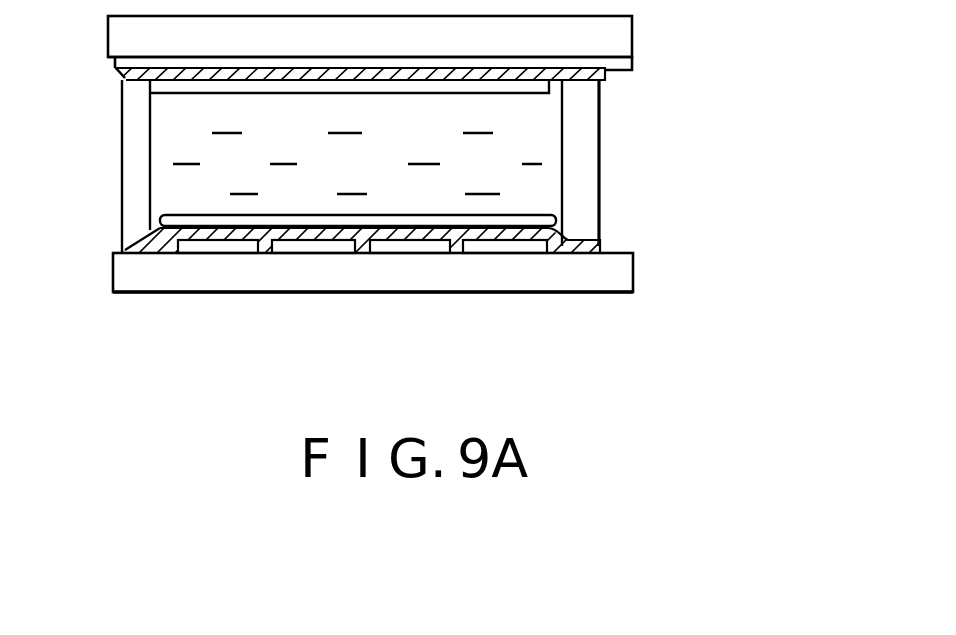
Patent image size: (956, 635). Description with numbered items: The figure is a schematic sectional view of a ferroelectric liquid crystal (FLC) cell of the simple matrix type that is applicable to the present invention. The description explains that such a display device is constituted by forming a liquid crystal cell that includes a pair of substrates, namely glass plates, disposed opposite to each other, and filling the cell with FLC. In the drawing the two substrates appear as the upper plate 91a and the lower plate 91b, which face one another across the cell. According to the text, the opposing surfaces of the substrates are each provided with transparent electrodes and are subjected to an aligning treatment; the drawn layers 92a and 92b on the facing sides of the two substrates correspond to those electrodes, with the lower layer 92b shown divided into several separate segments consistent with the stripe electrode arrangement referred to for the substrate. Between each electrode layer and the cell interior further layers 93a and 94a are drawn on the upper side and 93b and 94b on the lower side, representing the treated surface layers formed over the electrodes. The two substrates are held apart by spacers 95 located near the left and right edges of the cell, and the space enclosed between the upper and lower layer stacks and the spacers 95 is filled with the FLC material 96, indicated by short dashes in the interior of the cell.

The upper substrate 91a is at (622, 38).
The upper electrode 92a is at (632, 65).
The upper insulating layer 93a is at (605, 80).
The upper alignment film 94a is at (549, 95).
The spacer 95 is at (128, 137).
The liquid crystal layer 96 is at (543, 177).
The lower alignment film 94b is at (182, 215).
The lower insulating layer 93b is at (158, 233).
The lower electrode 92b is at (240, 248).
The lower substrate 91b is at (165, 277).